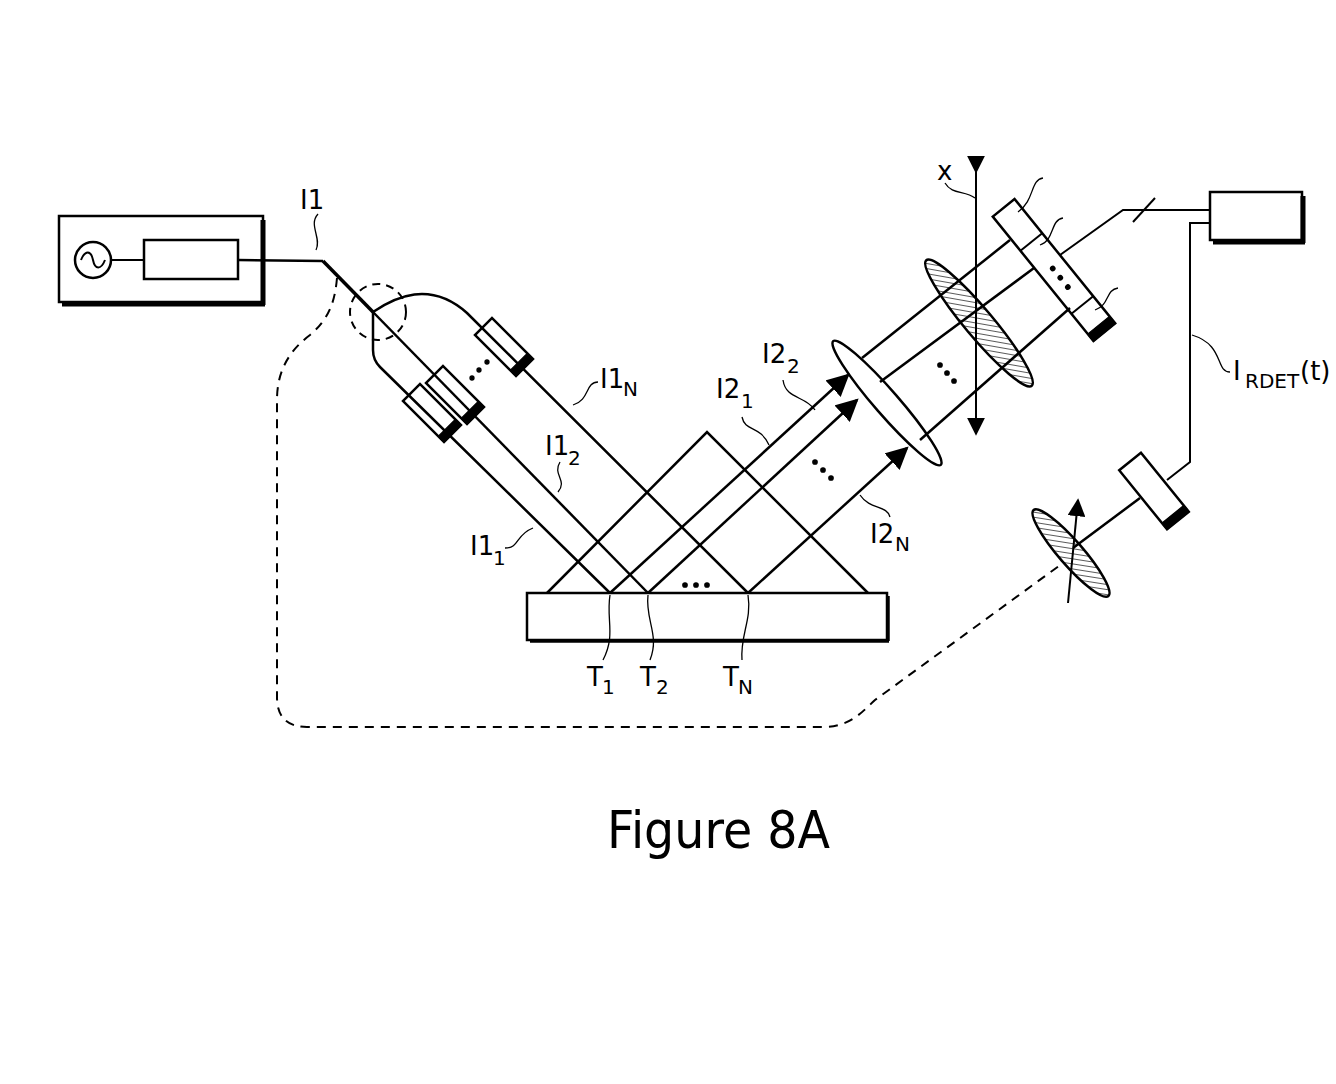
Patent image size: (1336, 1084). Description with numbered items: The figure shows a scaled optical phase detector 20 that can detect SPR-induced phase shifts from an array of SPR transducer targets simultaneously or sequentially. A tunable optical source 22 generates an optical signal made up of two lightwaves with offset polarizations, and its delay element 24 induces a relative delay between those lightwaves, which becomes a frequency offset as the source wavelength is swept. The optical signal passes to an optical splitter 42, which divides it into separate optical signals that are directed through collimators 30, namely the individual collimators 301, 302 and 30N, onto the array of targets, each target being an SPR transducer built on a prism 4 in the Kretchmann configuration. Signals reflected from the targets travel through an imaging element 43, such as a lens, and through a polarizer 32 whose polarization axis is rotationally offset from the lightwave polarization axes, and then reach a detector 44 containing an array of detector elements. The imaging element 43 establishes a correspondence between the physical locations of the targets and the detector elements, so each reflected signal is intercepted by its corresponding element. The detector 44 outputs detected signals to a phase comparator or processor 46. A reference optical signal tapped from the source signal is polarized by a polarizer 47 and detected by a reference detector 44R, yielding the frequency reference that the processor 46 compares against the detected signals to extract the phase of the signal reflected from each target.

The optical phase detector 20 is at (165, 562).
The tunable optical source 22 is at (191, 226).
The delay element 24 is at (208, 275).
The optical splitter 42 is at (392, 290).
The collimators 30 is at (469, 403).
The collimator 301 is at (418, 428).
The collimator 302 is at (472, 420).
The collimator 30N is at (518, 332).
The prism 4 is at (826, 587).
The imaging element 43 is at (940, 468).
The polarizer 32 is at (1035, 388).
The detector 44 is at (1110, 333).
The processor 46 is at (1274, 229).
The detector 44R is at (1178, 530).
The polarizer 47 is at (1108, 598).